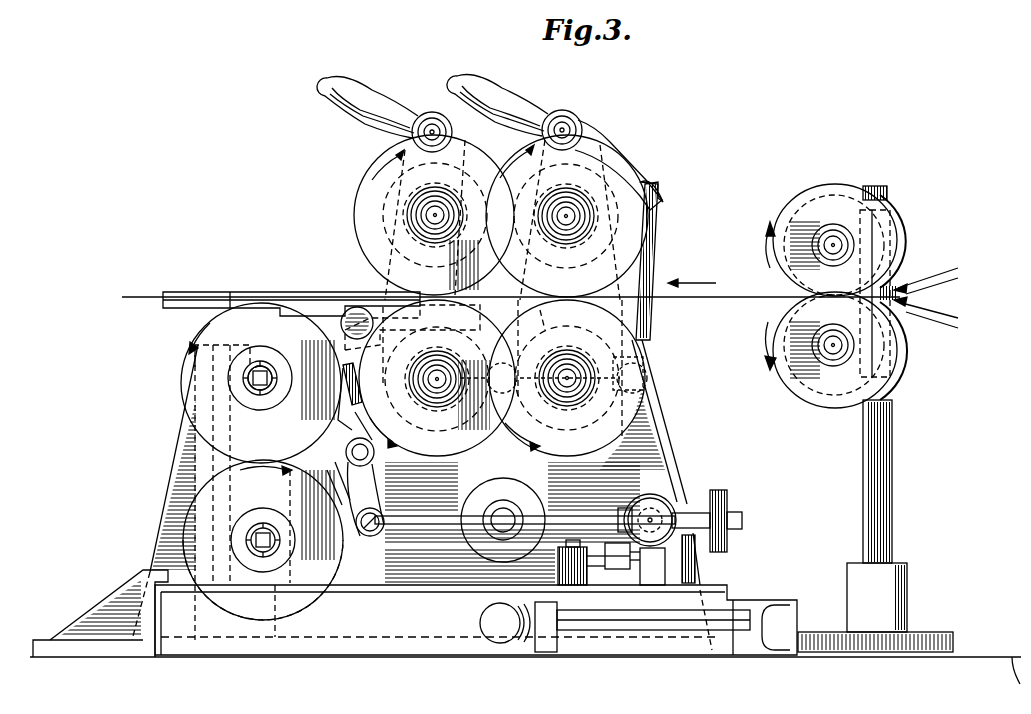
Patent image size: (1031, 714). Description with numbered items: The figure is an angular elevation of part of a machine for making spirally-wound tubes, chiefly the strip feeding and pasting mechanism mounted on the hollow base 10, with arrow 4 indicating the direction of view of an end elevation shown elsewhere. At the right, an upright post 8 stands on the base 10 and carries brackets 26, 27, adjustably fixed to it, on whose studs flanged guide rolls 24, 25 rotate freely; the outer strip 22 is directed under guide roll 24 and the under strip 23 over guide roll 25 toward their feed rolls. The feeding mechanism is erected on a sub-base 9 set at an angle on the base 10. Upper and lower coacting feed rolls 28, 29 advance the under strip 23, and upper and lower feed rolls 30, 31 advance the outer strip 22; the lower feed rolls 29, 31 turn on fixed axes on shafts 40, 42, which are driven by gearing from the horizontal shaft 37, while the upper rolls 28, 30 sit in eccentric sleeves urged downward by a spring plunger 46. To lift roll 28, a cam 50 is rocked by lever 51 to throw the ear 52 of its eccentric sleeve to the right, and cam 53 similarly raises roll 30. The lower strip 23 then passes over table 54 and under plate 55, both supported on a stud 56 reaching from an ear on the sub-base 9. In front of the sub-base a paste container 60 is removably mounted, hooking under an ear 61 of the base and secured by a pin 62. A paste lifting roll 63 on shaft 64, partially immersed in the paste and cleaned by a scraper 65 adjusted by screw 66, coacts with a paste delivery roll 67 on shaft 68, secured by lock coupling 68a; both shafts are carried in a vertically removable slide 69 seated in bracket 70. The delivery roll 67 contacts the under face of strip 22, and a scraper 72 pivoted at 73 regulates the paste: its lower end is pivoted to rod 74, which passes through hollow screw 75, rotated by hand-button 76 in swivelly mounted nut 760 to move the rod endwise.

The arrow 4 is at (700, 285).
The upright post 8 is at (880, 483).
The sub-base 9 is at (660, 445).
The hollow base 10 is at (980, 657).
The strip 22 is at (920, 278).
The strip 23 is at (916, 308).
The flanged guide roll 24 is at (792, 210).
The flanged guide roll 25 is at (787, 378).
The bracket 26 is at (890, 222).
The bracket 27 is at (890, 378).
The upper feed roll 28 is at (628, 162).
The lower feed roll 29 is at (640, 412).
The upper feed roll 30 is at (370, 187).
The lower feed roll 31 is at (440, 452).
The horizontal shaft 37 is at (510, 512).
The shaft 40 is at (568, 395).
The shaft 42 is at (435, 392).
The spring plunger 46 is at (656, 262).
The cam 50 is at (562, 110).
The lever 51 is at (500, 86).
The ear 52 is at (600, 128).
The cam 53 is at (432, 112).
The table 54 is at (452, 310).
The plate 55 is at (298, 292).
The stud 56 is at (355, 306).
The container 60 is at (476, 620).
The ear 61 is at (150, 573).
The pin 62 is at (620, 630).
The paste lifting roll 63 is at (300, 480).
The shaft 64 is at (266, 524).
The scraper 65 is at (305, 605).
The screw 66 is at (595, 545).
The paste delivery roll 67 is at (183, 388).
The shaft 68 is at (272, 366).
The lock coupling 68a is at (256, 392).
The slide 69 is at (190, 345).
The bracket 70 is at (172, 472).
The scraper 72 is at (342, 400).
The pivot 73 is at (388, 474).
The rod 74 is at (428, 516).
The hollow screw 75 is at (668, 506).
The hand-button 76 is at (722, 492).
The swivelly mounted nut 760 is at (645, 496).